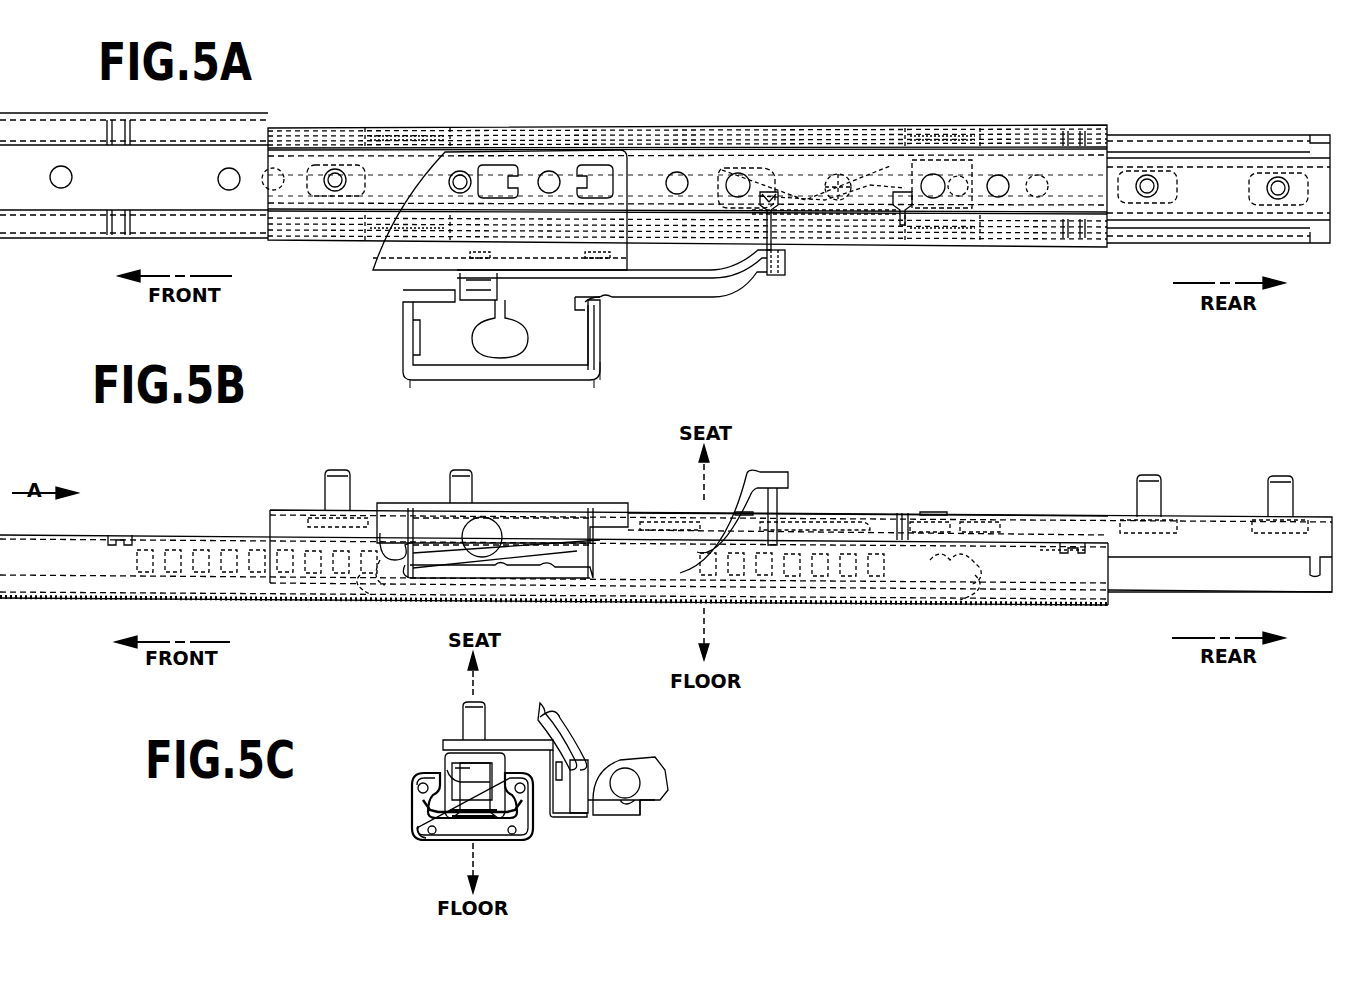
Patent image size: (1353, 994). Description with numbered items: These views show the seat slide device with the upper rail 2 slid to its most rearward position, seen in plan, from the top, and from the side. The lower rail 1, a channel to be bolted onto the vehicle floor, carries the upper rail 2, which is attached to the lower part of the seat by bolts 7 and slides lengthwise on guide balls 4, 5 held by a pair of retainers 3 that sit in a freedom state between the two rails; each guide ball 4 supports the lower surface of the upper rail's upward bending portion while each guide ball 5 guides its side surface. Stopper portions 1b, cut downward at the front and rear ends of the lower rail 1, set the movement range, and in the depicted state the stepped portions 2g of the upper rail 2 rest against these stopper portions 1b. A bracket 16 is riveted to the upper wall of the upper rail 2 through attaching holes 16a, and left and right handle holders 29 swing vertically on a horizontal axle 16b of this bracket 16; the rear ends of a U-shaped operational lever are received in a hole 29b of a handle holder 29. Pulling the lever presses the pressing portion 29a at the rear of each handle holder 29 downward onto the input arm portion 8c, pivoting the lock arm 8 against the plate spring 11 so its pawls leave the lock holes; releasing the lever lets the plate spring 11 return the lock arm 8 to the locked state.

In FIG. 5B, the lower rail 1 is at (1022, 606).
In FIG. 5C, the lower rail 1 is at (463, 840).
In FIG. 5B, the stopper portion 1b is at (122, 535).
In FIG. 5B, the upper rail 2 is at (1037, 528).
In FIG. 5C, the upper rail 2 is at (445, 767).
In FIG. 5B, the stepped portion 2g is at (1050, 553).
In FIG. 5B, the retainer 3 is at (370, 600).
In FIG. 5C, the retainer 3 is at (473, 812).
In FIG. 5C, the guide ball 4 is at (422, 833).
In FIG. 5C, the guide ball 5 is at (412, 793).
In FIG. 5A, the bolt 7 is at (335, 170).
In FIG. 5B, the bolt 7 is at (330, 486).
In FIG. 5C, the bolt 7 is at (468, 720).
In FIG. 5C, the lock arm 8 is at (450, 773).
In FIG. 5A, the input arm portion 8c is at (790, 278).
In FIG. 5B, the input arm portion 8c is at (780, 503).
In FIG. 5C, the input arm portion 8c is at (528, 720).
In FIG. 5C, the plate spring 11 is at (423, 817).
In FIG. 5A, the bracket 16 is at (627, 190).
In FIG. 5B, the bracket 16 is at (422, 503).
In FIG. 5C, the bracket 16 is at (498, 740).
In FIG. 5C, the attaching hole 16a is at (575, 770).
In FIG. 5A, the horizontal axle 16b is at (482, 285).
In FIG. 5B, the horizontal axle 16b is at (494, 530).
In FIG. 5A, the handle holder 29 is at (543, 352).
In FIG. 5B, the handle holder 29 is at (560, 525).
In FIG. 5C, the handle holder 29 is at (640, 767).
In FIG. 5A, the pressing portion 29a is at (787, 264).
In FIG. 5B, the pressing portion 29a is at (790, 475).
In FIG. 5C, the pressing portion 29a is at (543, 717).
In FIG. 5A, the hole 29b is at (603, 346).